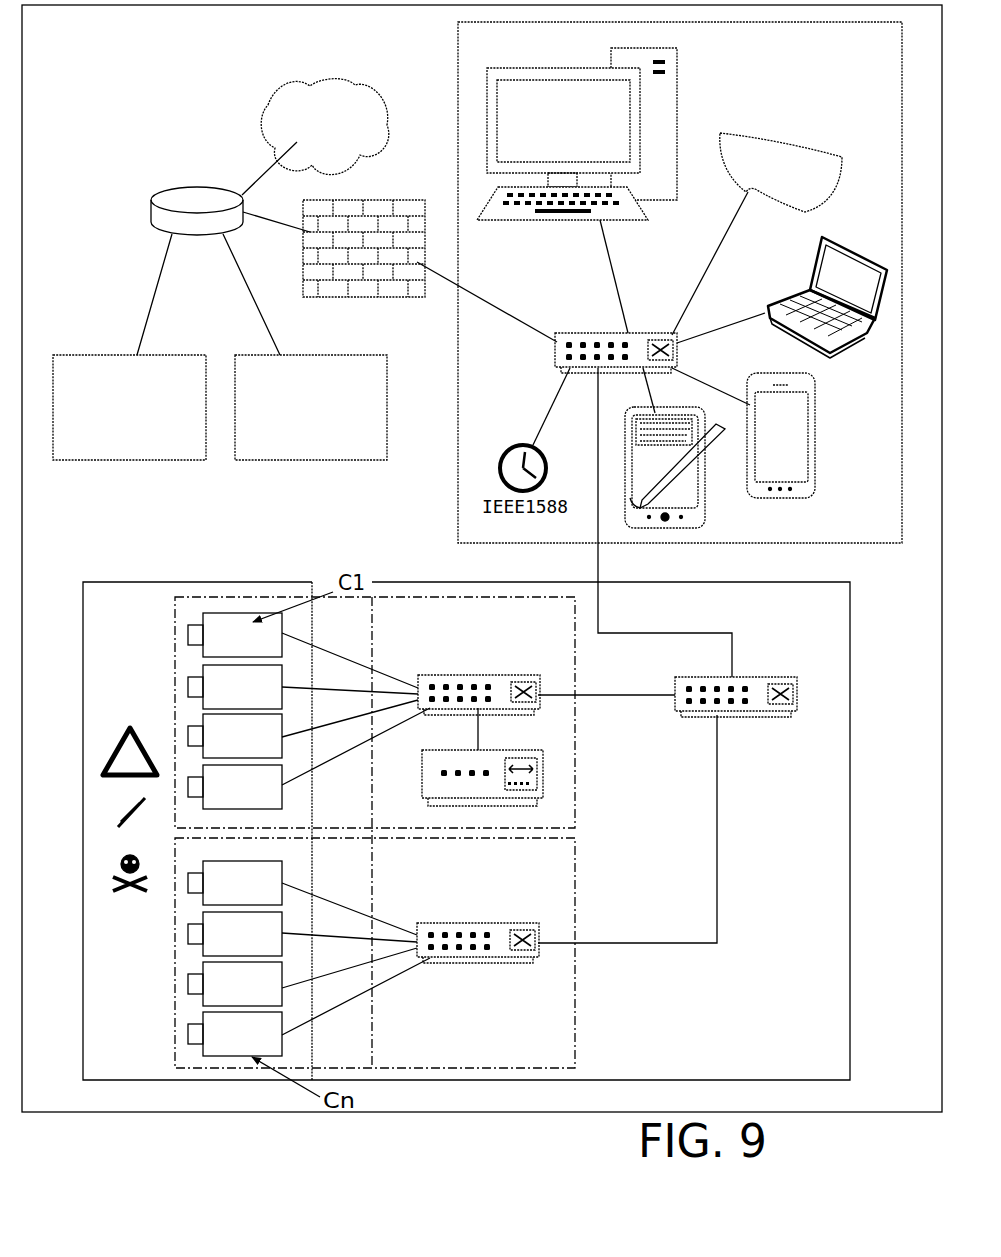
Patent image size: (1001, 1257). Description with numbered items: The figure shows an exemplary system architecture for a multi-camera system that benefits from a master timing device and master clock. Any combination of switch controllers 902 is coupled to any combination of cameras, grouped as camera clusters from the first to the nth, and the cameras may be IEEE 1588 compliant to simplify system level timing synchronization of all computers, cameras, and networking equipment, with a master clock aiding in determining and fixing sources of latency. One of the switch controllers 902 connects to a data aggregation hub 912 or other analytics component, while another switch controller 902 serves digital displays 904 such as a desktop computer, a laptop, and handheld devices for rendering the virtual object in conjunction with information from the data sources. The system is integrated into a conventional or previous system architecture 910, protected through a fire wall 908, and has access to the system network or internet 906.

The switch controller 902 is at (612, 347).
The digital display 904 is at (785, 139).
The system network or internet 906 is at (345, 111).
The fire wall 908 is at (365, 203).
The conventional or previous system architecture 910 is at (358, 357).
The data aggregation hub 912 is at (547, 776).